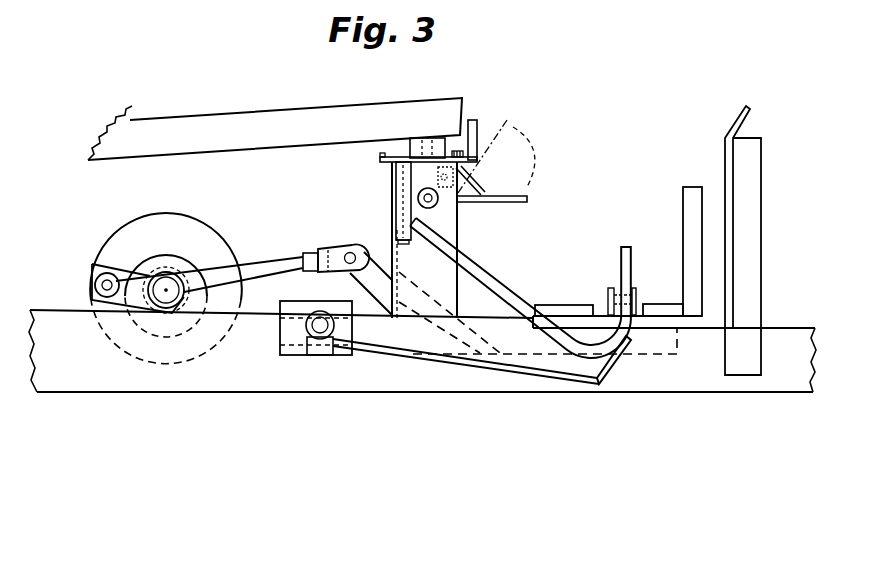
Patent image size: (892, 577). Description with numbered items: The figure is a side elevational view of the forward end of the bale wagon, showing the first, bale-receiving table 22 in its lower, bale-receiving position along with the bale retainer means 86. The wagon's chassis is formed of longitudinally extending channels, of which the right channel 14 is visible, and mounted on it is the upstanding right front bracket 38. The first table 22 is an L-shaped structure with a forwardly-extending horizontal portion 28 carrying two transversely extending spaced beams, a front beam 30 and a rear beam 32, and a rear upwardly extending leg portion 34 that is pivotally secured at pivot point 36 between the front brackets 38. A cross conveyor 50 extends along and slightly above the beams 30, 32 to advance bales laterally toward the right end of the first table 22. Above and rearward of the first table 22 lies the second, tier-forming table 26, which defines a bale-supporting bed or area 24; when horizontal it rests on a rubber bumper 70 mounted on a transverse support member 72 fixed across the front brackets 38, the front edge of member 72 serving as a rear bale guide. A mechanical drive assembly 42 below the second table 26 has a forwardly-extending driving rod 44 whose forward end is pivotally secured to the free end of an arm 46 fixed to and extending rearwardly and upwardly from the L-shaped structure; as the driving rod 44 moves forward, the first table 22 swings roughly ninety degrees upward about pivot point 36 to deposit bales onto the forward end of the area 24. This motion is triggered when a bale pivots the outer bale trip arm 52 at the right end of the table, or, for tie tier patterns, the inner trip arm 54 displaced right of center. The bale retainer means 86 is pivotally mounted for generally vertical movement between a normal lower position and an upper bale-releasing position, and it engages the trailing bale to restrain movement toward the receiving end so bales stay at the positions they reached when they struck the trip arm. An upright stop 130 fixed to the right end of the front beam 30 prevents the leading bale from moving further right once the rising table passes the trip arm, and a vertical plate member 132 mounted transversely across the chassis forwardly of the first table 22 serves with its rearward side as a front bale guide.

The right longitudinal channel 14 is at (135, 393).
The first, bale-receiving table 22 is at (537, 300).
The bale-supporting bed or area 24 is at (278, 107).
The second, tier-forming table 26 is at (184, 114).
The forwardly-extending horizontal portion 28 is at (645, 357).
The front beam 30 is at (663, 303).
The rear beam 32 is at (553, 305).
The rear upwardly extending leg portion 34 is at (392, 246).
The pivot point 36 is at (432, 202).
The right front bracket 38 is at (458, 243).
The mechanical drive assembly 42 is at (96, 264).
The driving rod 44 is at (249, 258).
The arm 46 is at (370, 283).
The cross conveyor 50 is at (612, 288).
The outer bale trip arm 52 is at (540, 362).
The inner trip arm 54 is at (574, 384).
The rubber bumper 70 is at (396, 158).
The transverse support member 72 is at (472, 120).
The bale retainer means 86 is at (512, 162).
The upright stop 130 is at (693, 187).
The vertical plate member 132 is at (735, 118).